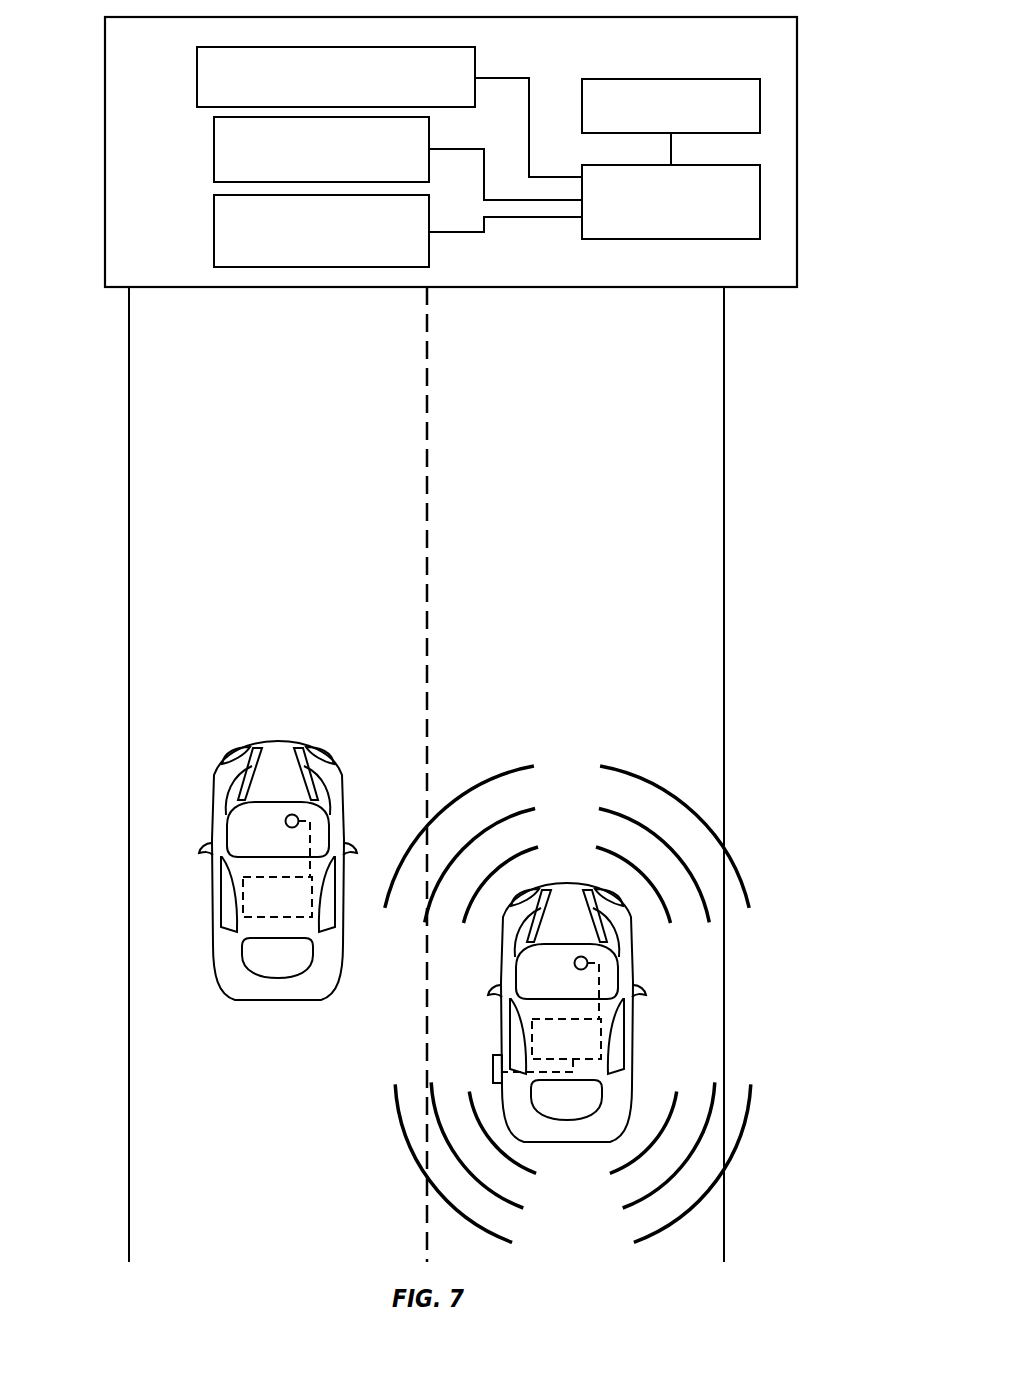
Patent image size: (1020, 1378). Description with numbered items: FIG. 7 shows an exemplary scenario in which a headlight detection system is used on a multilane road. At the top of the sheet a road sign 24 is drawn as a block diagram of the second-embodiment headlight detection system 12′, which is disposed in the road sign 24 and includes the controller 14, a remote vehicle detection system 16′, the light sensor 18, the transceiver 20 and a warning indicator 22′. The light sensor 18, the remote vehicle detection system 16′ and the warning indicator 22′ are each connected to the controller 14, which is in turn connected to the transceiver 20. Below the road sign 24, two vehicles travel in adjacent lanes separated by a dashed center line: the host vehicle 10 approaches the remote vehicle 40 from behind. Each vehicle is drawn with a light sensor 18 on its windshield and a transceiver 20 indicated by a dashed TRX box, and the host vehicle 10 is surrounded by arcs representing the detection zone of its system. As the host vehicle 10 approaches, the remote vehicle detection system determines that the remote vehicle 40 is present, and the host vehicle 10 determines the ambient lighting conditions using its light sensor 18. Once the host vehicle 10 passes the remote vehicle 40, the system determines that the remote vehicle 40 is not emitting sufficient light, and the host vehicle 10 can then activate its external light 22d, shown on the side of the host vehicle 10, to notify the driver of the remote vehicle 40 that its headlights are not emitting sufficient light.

The road sign 24 is at (105, 152).
The warning indicator 22′ is at (477, 62).
The light sensor 18 is at (214, 147).
The headlight detection system 12′ is at (193, 174).
The remote vehicle detection system 16′ is at (214, 230).
The transceiver 20 is at (672, 79).
The controller 14 is at (672, 239).
The remote vehicle 40 is at (233, 750).
The host vehicle 10 is at (632, 1046).
The external light 22d is at (493, 1068).